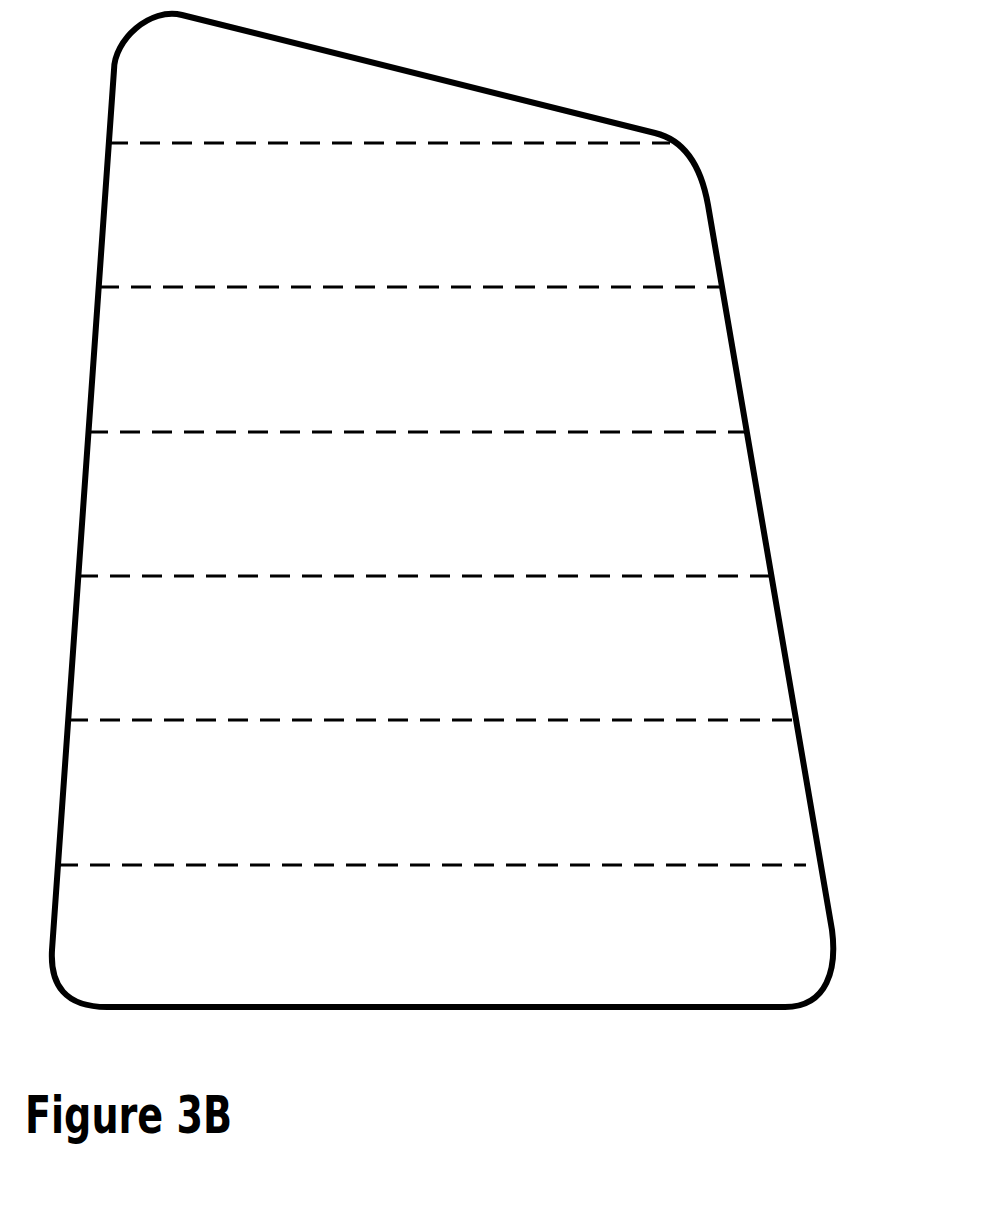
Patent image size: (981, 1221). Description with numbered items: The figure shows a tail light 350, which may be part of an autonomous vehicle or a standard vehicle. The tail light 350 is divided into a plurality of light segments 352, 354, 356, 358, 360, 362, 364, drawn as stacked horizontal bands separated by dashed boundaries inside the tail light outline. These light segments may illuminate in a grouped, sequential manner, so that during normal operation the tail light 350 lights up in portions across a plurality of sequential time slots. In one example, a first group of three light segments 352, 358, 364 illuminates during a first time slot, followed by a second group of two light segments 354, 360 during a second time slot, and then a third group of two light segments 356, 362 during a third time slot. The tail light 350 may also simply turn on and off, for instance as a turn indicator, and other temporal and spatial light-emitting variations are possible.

The tail light 350 is at (698, 92).
The light segment 352 is at (234, 100).
The light segment 354 is at (234, 228).
The light segment 356 is at (234, 374).
The light segment 358 is at (234, 526).
The light segment 360 is at (234, 654).
The light segment 362 is at (234, 801).
The light segment 364 is at (234, 952).